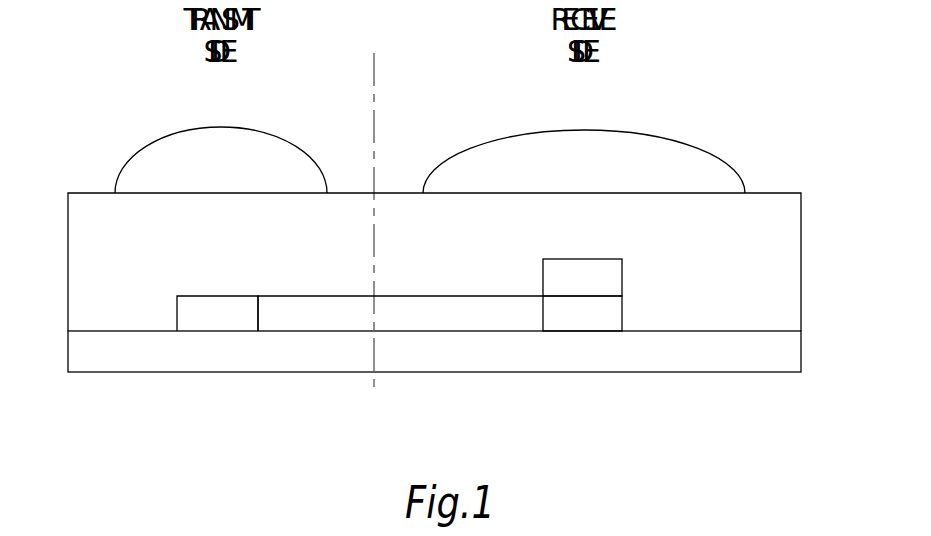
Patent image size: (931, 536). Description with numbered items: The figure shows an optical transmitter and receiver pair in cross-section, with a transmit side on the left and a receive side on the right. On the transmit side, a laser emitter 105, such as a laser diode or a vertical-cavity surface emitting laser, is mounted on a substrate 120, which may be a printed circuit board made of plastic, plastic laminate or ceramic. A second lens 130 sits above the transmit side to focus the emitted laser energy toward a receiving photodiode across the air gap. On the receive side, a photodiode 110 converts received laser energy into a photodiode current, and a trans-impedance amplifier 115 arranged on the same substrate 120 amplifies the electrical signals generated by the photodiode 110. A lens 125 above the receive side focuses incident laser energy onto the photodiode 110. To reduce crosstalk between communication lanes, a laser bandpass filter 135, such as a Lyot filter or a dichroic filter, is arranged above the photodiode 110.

The laser emitter 105 is at (203, 320).
The photodiode 110 is at (624, 312).
The trans-impedance amplifier 115 is at (318, 320).
The substrate 120 is at (433, 345).
The lens 125 is at (584, 138).
The second lens 130 is at (223, 136).
The laser bandpass filter 135 is at (624, 277).